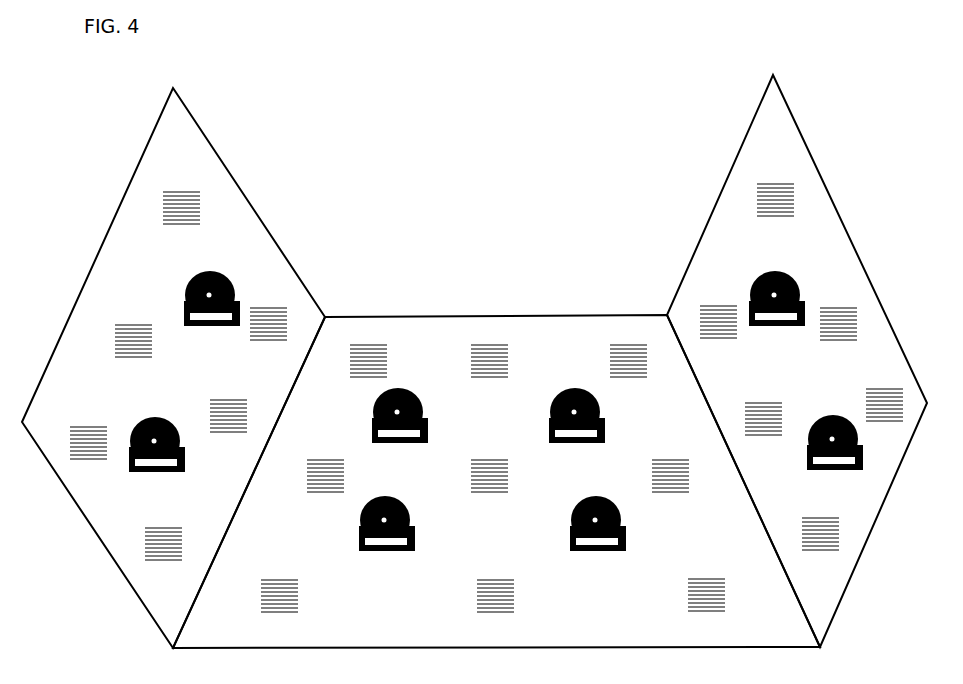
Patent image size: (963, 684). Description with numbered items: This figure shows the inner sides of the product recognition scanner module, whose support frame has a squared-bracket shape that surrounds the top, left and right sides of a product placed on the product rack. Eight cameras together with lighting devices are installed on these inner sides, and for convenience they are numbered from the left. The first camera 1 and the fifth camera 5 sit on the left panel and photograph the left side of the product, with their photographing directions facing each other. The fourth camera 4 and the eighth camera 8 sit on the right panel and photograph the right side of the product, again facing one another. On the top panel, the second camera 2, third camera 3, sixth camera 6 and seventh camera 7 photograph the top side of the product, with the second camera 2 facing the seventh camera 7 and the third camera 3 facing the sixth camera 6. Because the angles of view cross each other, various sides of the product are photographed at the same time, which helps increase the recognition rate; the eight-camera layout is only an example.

The first camera 1 is at (186, 296).
The second camera 2 is at (378, 415).
The third camera 3 is at (558, 415).
The fourth camera 4 is at (756, 296).
The fifth camera 5 is at (133, 436).
The sixth camera 6 is at (355, 523).
The seventh camera 7 is at (573, 523).
The eighth camera 8 is at (813, 456).